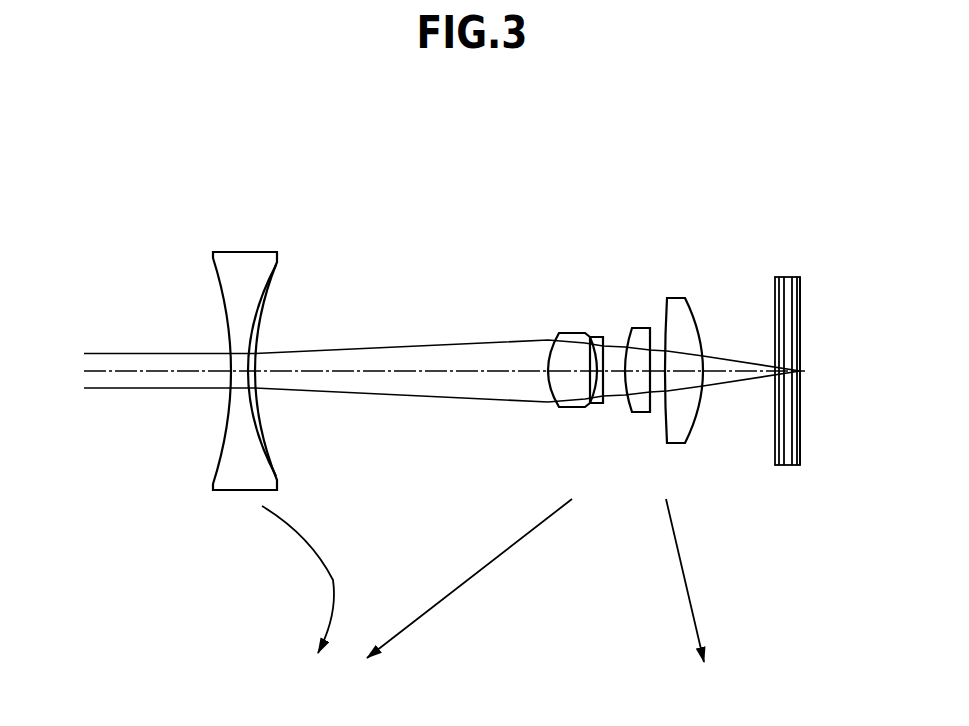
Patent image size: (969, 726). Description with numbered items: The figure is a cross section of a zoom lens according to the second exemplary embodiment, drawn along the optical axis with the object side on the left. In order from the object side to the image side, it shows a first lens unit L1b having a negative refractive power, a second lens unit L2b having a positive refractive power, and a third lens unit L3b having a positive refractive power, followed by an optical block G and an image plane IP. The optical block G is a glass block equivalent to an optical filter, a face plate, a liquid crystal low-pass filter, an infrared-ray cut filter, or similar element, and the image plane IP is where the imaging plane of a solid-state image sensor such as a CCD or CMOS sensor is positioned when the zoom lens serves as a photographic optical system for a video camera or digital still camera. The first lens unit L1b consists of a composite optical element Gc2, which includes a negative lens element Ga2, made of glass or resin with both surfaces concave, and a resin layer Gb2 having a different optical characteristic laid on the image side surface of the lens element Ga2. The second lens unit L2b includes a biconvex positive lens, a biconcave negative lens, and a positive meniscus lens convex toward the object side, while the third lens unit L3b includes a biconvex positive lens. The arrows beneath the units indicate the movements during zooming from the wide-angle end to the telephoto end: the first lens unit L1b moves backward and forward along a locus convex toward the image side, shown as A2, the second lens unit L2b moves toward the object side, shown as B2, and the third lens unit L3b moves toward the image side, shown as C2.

The first lens unit L1b is at (192, 247).
The composite optical element Gc2 is at (197, 256).
The lens element Ga2 is at (228, 478).
The resin layer Gb2 is at (260, 417).
The second lens unit L2b is at (649, 308).
The third lens unit L3b is at (665, 293).
The optical block G is at (763, 283).
The image plane IP is at (805, 421).
The locus of first lens unit A2 is at (308, 579).
The movement of second lens unit B2 is at (469, 578).
The movement of third lens unit C2 is at (692, 580).